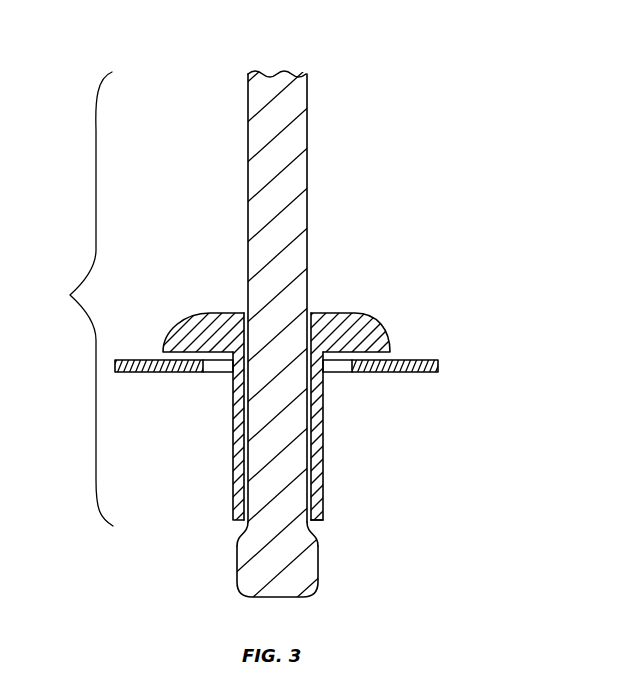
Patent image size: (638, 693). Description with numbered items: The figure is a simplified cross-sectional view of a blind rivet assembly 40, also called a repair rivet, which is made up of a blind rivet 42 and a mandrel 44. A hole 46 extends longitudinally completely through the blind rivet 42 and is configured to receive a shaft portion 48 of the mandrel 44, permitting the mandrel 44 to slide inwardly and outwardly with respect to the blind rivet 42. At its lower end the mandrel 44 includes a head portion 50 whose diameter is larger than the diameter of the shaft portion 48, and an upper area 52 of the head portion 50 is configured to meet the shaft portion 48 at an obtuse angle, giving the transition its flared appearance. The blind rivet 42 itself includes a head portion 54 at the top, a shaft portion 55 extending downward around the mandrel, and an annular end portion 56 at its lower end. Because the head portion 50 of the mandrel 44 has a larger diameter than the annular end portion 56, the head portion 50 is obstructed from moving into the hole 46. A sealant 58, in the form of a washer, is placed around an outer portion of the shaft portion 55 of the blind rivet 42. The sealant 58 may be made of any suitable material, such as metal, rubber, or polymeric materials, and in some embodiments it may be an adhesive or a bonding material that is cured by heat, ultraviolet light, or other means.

The blind rivet assembly 40 is at (435, 166).
The blind rivet 42 is at (345, 309).
The mandrel 44 is at (307, 175).
The hole 46 is at (247, 313).
The shaft portion 48 is at (78, 299).
The head portion 50 is at (147, 523).
The upper area 52 is at (238, 533).
The head portion 54 is at (313, 313).
The shaft portion 55 is at (323, 412).
The annular end portion 56 is at (317, 522).
The sealant 58 is at (142, 359).